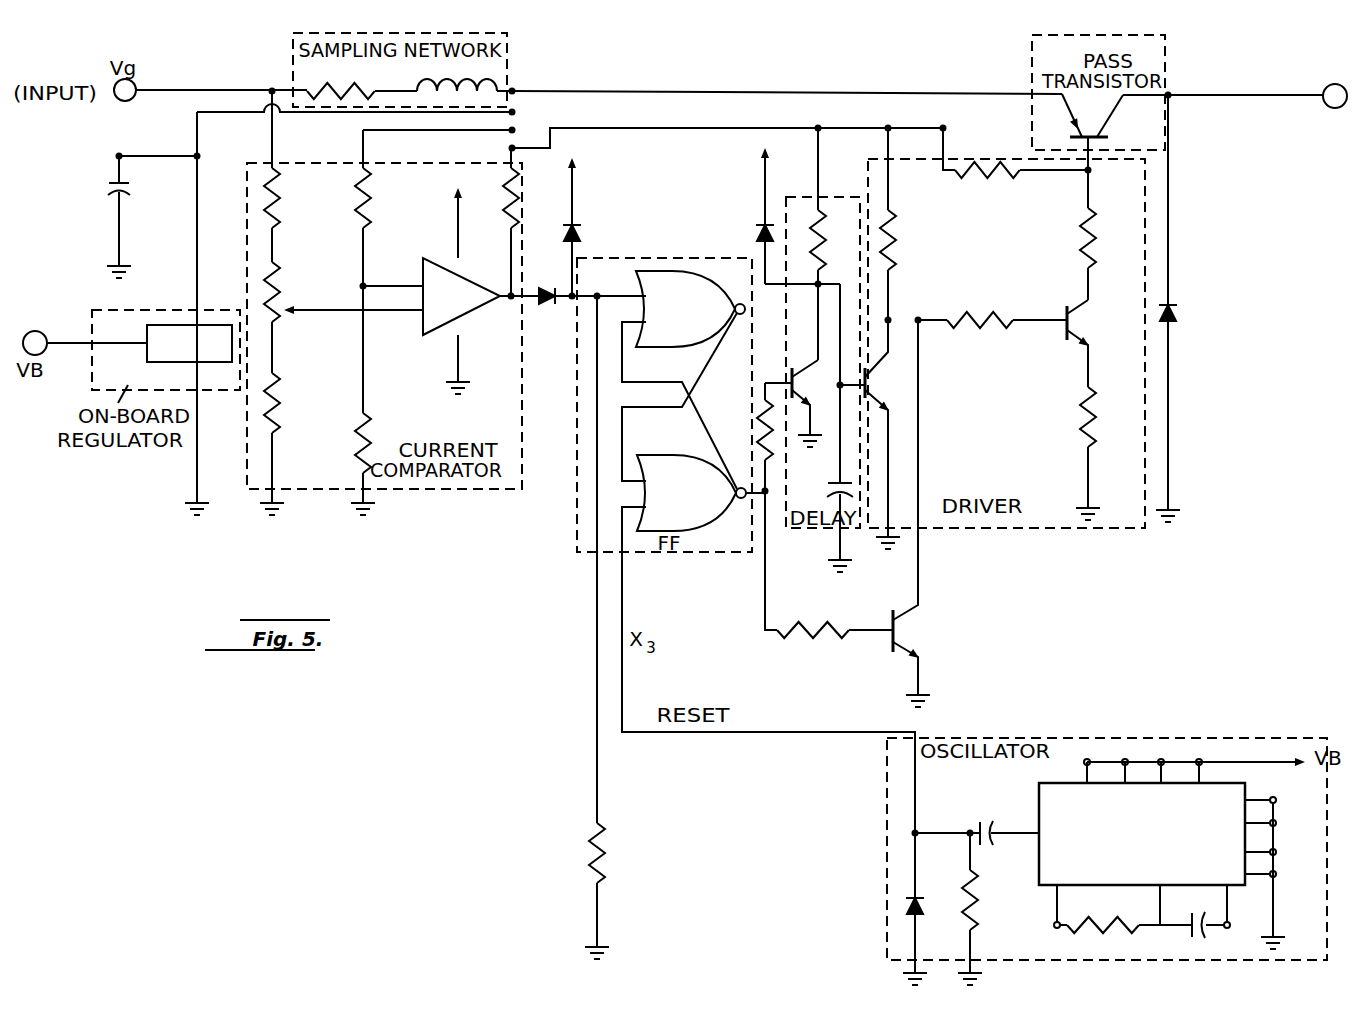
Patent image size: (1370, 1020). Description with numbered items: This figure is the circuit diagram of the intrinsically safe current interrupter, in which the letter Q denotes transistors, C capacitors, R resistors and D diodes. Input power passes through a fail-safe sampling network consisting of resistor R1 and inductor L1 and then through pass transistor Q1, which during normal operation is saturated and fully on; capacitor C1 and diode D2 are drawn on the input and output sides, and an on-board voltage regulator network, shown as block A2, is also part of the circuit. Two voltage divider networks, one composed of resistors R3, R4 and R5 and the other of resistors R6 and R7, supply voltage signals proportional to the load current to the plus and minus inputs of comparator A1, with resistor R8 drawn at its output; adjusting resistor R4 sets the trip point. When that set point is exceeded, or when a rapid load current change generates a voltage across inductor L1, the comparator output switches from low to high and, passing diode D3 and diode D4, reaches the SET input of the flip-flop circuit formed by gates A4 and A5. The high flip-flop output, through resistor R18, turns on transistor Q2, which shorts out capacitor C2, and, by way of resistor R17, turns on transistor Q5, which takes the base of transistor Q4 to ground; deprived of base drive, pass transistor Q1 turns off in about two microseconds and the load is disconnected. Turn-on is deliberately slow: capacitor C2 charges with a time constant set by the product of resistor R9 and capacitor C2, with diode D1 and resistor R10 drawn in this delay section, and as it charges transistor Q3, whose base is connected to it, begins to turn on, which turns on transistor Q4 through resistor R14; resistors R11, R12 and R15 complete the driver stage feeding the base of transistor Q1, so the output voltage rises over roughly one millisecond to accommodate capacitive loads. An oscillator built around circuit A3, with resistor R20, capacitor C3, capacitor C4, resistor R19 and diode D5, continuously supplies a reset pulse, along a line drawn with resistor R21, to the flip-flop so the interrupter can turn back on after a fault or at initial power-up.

The input filter capacitor C1 is at (133, 217).
The resistor R1 is at (341, 80).
The inductor L1 is at (457, 93).
The resistor R3 is at (287, 176).
The resistor R4 is at (343, 317).
The resistor R5 is at (285, 444).
The resistor R6 is at (378, 208).
The resistor R7 is at (374, 400).
The pull-up resistor R8 is at (529, 222).
The comparator A1 is at (437, 278).
The on-board regulator A2 is at (189, 343).
The comparator output diode D3 is at (541, 282).
The clamp diode D4 is at (588, 221).
The flip-flop A4 is at (690, 309).
The flip-flop NOR gate A5 is at (701, 493).
The flip-flop output resistor R18 is at (743, 437).
The transistor Q2 is at (788, 398).
The resistor R9 is at (833, 206).
The clamp diode D1 is at (747, 215).
The capacitor C2 is at (823, 428).
The transistor Q3 is at (873, 434).
The driver resistor R10 is at (911, 224).
The driver resistor R11 is at (1015, 153).
The driver collector resistor R12 is at (1107, 235).
The driver base resistor R14 is at (992, 308).
The transistor Q4 is at (1064, 334).
The driver emitter resistor R15 is at (1105, 453).
The pass transistor Q1 is at (1104, 132).
The output diode D2 is at (1183, 308).
The reset base resistor R17 is at (829, 564).
The transistor Q5 is at (896, 513).
The pull-down resistor R21 is at (617, 627).
The oscillator diode D5 is at (890, 909).
The oscillator coupling capacitor C4 is at (977, 817).
The oscillator resistor R19 is at (989, 909).
The oscillator integrated circuit A3 is at (1142, 834).
The oscillator timing resistor R20 is at (1123, 909).
The oscillator timing capacitor C3 is at (1208, 911).